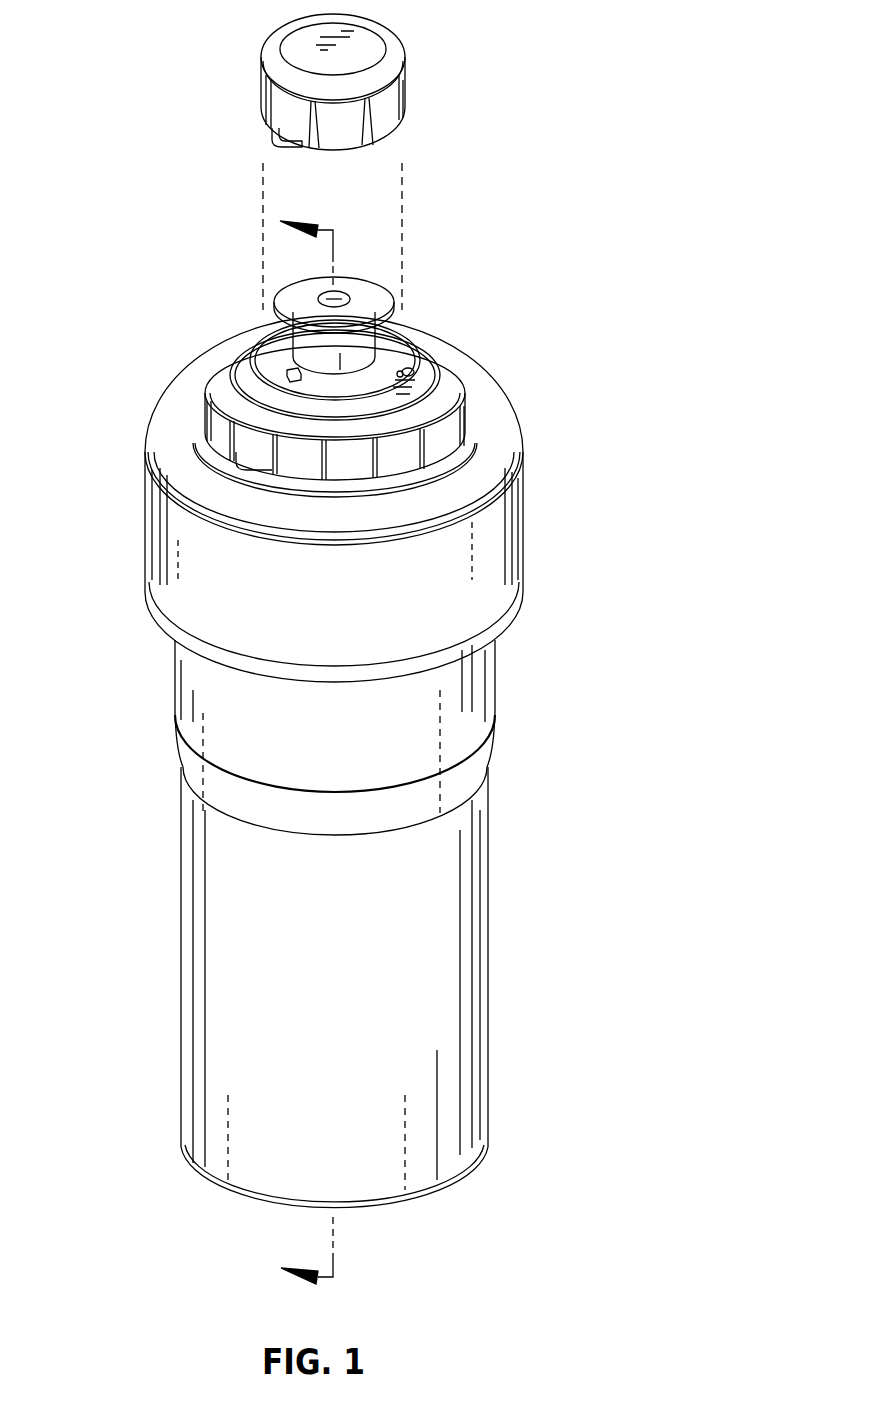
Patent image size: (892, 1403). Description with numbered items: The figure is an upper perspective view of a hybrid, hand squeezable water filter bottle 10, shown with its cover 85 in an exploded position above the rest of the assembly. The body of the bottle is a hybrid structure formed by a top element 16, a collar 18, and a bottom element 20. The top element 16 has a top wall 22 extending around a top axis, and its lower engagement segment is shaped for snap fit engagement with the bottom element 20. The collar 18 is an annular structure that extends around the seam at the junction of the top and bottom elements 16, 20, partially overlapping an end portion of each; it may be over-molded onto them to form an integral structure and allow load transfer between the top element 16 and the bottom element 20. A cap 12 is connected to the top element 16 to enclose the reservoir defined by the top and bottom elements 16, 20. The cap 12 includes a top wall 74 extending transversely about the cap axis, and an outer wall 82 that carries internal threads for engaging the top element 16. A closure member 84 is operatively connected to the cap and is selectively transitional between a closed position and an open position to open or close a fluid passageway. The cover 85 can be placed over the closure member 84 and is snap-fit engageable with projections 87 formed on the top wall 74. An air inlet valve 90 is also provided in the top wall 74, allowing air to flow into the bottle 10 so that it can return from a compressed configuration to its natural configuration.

The water filter bottle 10 is at (108, 148).
The cap 12 is at (458, 328).
The top element 16 is at (540, 526).
The collar 18 is at (517, 674).
The bottom element 20 is at (515, 897).
The top wall 22 is at (157, 537).
The top wall 74 is at (270, 349).
The outer wall 82 is at (443, 431).
The closure member 84 is at (373, 302).
The cover 85 is at (372, 42).
The projections 87 is at (287, 375).
The air inlet valve 90 is at (395, 370).